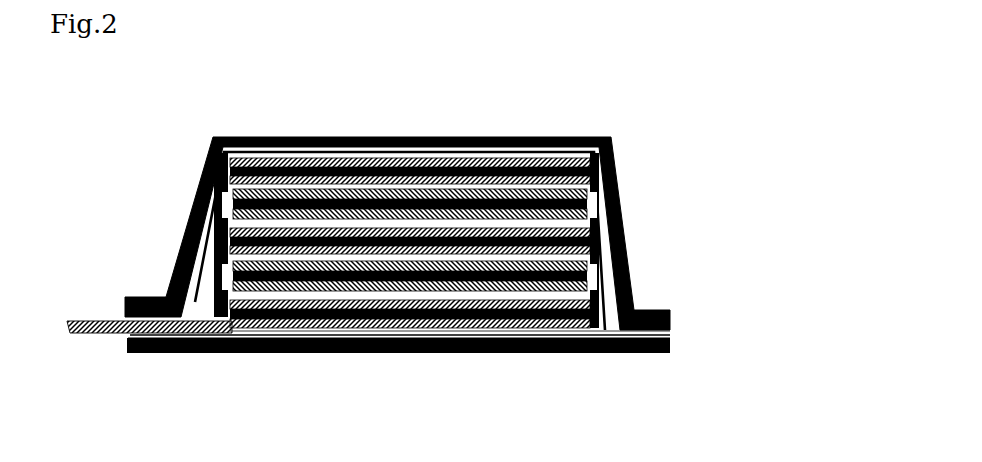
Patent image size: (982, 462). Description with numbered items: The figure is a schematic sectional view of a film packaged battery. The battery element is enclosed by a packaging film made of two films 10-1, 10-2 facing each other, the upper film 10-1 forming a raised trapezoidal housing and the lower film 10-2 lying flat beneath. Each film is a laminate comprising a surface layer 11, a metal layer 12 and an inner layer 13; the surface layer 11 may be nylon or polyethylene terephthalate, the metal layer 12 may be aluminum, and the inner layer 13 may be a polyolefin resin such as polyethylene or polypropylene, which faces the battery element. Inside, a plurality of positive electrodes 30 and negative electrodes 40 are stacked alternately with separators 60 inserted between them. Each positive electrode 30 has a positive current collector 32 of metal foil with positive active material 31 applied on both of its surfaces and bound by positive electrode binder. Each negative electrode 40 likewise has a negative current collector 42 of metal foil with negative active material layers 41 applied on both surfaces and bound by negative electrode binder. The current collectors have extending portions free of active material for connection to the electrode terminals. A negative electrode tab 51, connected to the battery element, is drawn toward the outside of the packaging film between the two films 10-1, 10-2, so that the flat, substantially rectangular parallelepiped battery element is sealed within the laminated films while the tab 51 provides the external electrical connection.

The film 10-1 is at (477, 289).
The film 10-2 is at (749, 347).
The surface layer 11 is at (647, 312).
The metal layer 12 is at (662, 310).
The inner layer 13 is at (670, 332).
The positive electrode 30 is at (410, 197).
The positive active material 31 is at (455, 196).
The positive current collector 32 is at (497, 200).
The negative electrode 40 is at (398, 366).
The negative active material layer 41 is at (384, 326).
The negative current collector 42 is at (337, 320).
The negative electrode tab 51 is at (100, 333).
The separator 60 is at (288, 228).